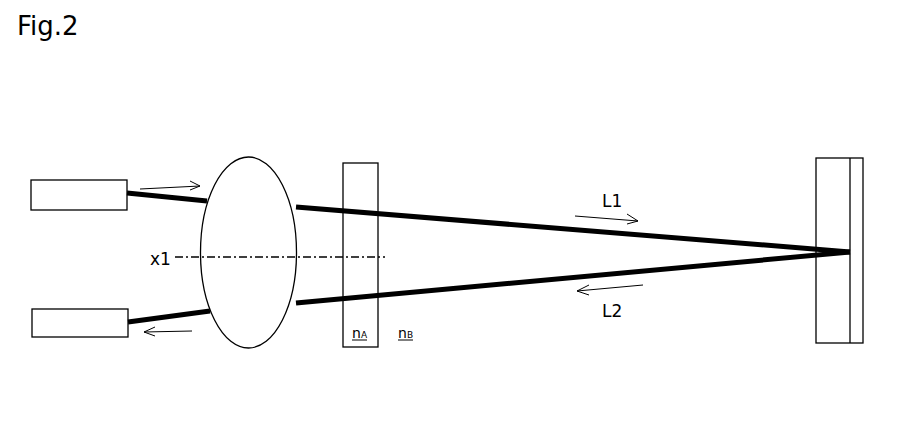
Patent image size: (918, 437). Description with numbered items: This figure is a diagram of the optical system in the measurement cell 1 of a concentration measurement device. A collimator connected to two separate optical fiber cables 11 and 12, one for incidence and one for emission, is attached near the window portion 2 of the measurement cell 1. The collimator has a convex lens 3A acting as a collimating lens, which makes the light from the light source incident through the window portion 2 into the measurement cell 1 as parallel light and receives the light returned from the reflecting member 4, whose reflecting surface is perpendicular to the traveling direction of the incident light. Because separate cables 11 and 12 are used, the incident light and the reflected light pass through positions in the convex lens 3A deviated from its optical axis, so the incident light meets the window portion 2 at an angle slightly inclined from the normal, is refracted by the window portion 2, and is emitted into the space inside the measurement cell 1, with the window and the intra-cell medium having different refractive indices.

The measurement cell 1 is at (563, 128).
The window portion 2 is at (363, 183).
The convex lens 3A is at (246, 322).
The reflecting member 4 is at (833, 185).
The optical fiber cable 11 is at (88, 188).
The optical fiber cable 12 is at (86, 318).